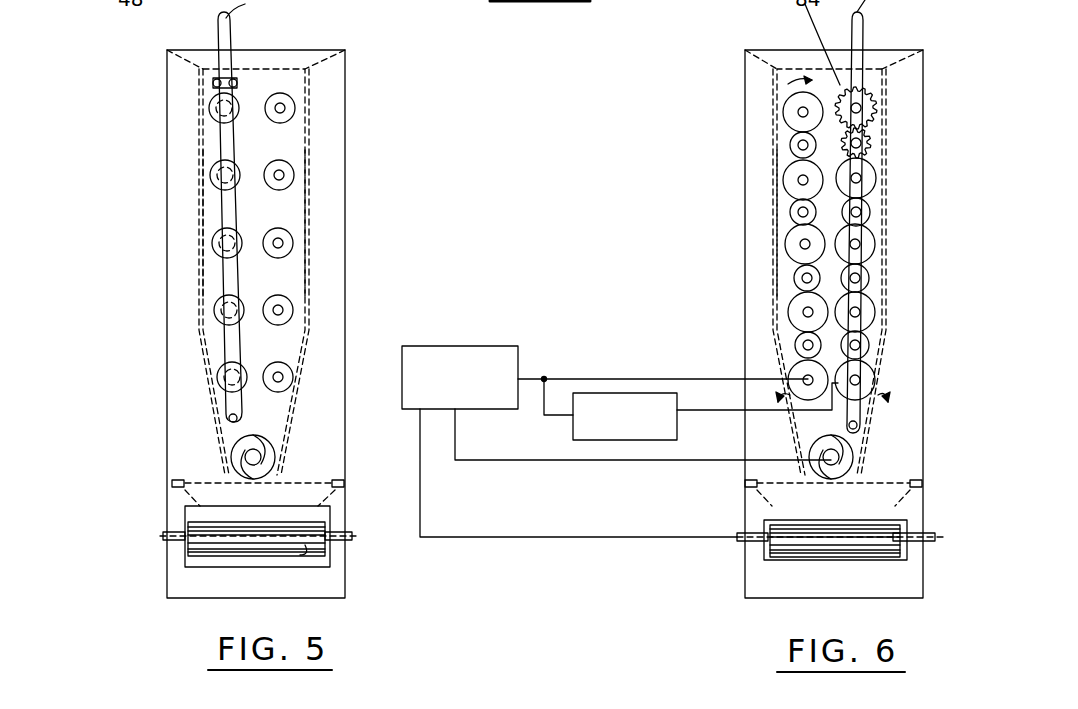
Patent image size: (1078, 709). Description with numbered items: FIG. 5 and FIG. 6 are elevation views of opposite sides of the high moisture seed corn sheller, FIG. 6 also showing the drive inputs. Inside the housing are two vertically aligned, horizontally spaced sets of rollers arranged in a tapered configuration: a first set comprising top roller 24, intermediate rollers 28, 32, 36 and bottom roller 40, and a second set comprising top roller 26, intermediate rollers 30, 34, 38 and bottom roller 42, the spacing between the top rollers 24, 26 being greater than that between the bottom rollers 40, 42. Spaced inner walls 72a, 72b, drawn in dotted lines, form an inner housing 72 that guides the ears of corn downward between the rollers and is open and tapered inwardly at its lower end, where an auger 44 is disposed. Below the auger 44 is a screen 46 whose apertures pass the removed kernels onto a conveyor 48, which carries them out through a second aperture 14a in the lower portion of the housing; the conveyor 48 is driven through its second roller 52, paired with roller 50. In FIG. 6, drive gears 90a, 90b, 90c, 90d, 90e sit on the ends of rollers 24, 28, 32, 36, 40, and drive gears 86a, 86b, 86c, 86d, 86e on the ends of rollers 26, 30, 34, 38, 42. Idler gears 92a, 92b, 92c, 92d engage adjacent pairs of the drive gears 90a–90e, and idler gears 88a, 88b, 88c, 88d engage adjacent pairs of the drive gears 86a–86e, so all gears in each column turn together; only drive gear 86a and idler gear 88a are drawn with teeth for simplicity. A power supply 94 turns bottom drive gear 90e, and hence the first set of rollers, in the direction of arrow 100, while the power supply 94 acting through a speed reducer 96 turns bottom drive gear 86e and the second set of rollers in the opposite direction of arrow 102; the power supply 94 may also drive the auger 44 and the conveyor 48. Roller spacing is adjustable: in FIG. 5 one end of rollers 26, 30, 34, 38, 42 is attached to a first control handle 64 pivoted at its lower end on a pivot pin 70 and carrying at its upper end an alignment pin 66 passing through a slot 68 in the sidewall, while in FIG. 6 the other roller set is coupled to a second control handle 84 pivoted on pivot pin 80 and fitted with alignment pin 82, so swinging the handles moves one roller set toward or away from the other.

In FIG. 5, the second aperture 14a is at (305, 558).
In FIG. 5, the top roller 24 is at (292, 104).
In FIG. 5, the top roller 26 is at (212, 108).
In FIG. 5, the intermediate roller 28 is at (292, 175).
In FIG. 5, the intermediate roller 30 is at (211, 177).
In FIG. 5, the intermediate roller 32 is at (291, 242).
In FIG. 5, the intermediate roller 34 is at (213, 243).
In FIG. 5, the intermediate roller 36 is at (292, 308).
In FIG. 5, the intermediate roller 38 is at (215, 310).
In FIG. 5, the bottom roller 40 is at (292, 377).
In FIG. 5, the bottom roller 42 is at (218, 377).
In FIG. 5, the auger 44 is at (240, 458).
In FIG. 6, the auger 44 is at (820, 462).
In FIG. 5, the screen 46 is at (183, 490).
In FIG. 6, the screen 46 is at (757, 490).
In FIG. 5, the conveyor 48 is at (300, 522).
In FIG. 6, the conveyor 48 is at (785, 528).
In FIG. 5, the take-up roller 50 is at (200, 540).
In FIG. 6, the second roller 52 is at (780, 548).
In FIG. 5, the first control handle 64 is at (243, 9).
In FIG. 5, the alignment pin 66 is at (226, 72).
In FIG. 5, the slot 68 is at (212, 83).
In FIG. 5, the pivot pin 70 is at (230, 418).
In FIG. 5, the inner housing 72 is at (312, 116).
In FIG. 5, the inner wall 72a is at (200, 212).
In FIG. 6, the inner wall 72a is at (884, 150).
In FIG. 5, the inner wall 72b is at (304, 148).
In FIG. 6, the inner wall 72b is at (776, 206).
In FIG. 6, the pivot pin 80 is at (857, 430).
In FIG. 6, the alignment pin 82 is at (864, 70).
In FIG. 6, the handle 84 is at (822, 44).
In FIG. 6, the drive gear 86a is at (870, 100).
In FIG. 6, the drive gear 86b is at (868, 180).
In FIG. 6, the drive gear 86c is at (868, 244).
In FIG. 6, the drive gear 86d is at (868, 312).
In FIG. 6, the drive gear 86e is at (868, 381).
In FIG. 6, the idler gear 88a is at (866, 140).
In FIG. 6, the idler gear 88b is at (866, 214).
In FIG. 6, the idler gear 88c is at (866, 278).
In FIG. 6, the idler gear 88d is at (866, 345).
In FIG. 6, the drive gear 90a is at (790, 102).
In FIG. 6, the drive gear 90b is at (793, 170).
In FIG. 6, the drive gear 90c is at (795, 240).
In FIG. 6, the drive gear 90d is at (797, 308).
In FIG. 6, the drive gear 90e is at (798, 377).
In FIG. 6, the idler gear 92a is at (795, 138).
In FIG. 6, the idler gear 92b is at (796, 206).
In FIG. 6, the idler gear 92c is at (798, 274).
In FIG. 6, the idler gear 92d is at (799, 341).
In FIG. 6, the power supply 94 is at (462, 350).
In FIG. 6, the speed reducer 96 is at (573, 433).
In FIG. 6, the arrow 100 is at (783, 400).
In FIG. 6, the arrow 102 is at (884, 405).